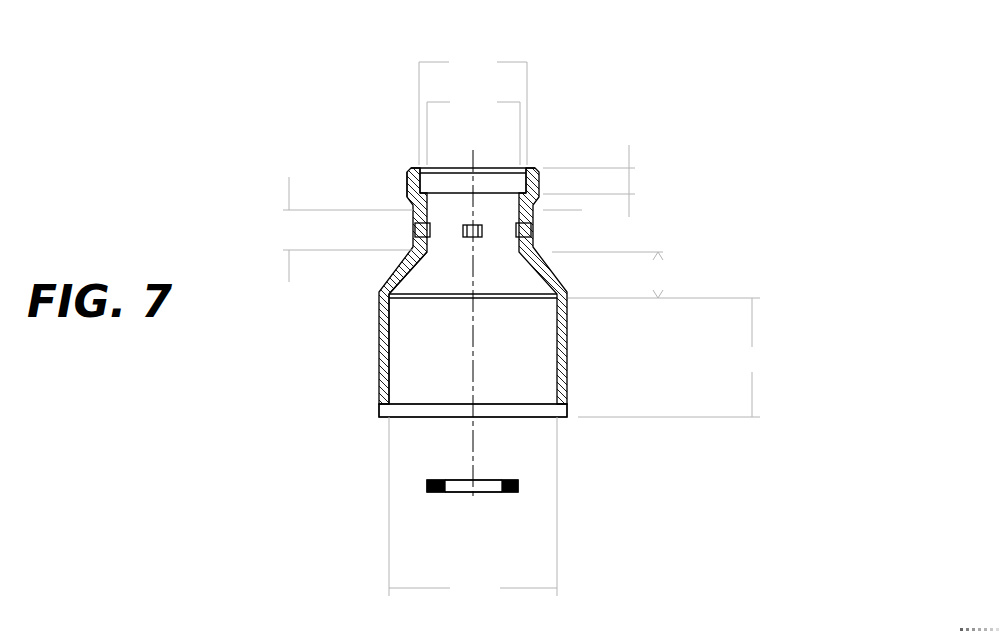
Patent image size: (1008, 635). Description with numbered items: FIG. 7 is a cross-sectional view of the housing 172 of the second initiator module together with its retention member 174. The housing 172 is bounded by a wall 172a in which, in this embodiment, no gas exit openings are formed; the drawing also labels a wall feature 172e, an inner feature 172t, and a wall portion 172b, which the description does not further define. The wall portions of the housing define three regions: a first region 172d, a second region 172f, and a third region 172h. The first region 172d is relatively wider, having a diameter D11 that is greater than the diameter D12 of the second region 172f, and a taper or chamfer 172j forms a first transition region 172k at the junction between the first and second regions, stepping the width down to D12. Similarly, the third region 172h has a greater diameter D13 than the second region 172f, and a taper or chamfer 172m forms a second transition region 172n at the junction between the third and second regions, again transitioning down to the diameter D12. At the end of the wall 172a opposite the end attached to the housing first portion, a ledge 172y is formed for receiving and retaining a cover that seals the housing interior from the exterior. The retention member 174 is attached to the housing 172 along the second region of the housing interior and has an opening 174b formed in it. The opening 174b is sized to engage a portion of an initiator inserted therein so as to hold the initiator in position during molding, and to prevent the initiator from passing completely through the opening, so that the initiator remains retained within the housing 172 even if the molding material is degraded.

The housing 172 is at (400, 155).
The wall 172a is at (408, 183).
The rib 172e is at (413, 213).
The second region 172f is at (289, 280).
The inner protrusion 172t is at (468, 237).
The taper or chamfer 172m is at (437, 275).
The body inner wall 172b is at (447, 365).
The ledge 172y is at (438, 404).
The taper or chamfer 172j is at (503, 202).
The first transition region 172k is at (576, 238).
The first region 172d is at (682, 145).
The second transition region 172n is at (712, 229).
The third region 172h is at (778, 369).
The first region diameter D11 is at (497, 75).
The second region diameter D12 is at (497, 113).
The third region diameter D13 is at (497, 600).
The retention member 174 is at (553, 470).
The opening 174b is at (482, 485).